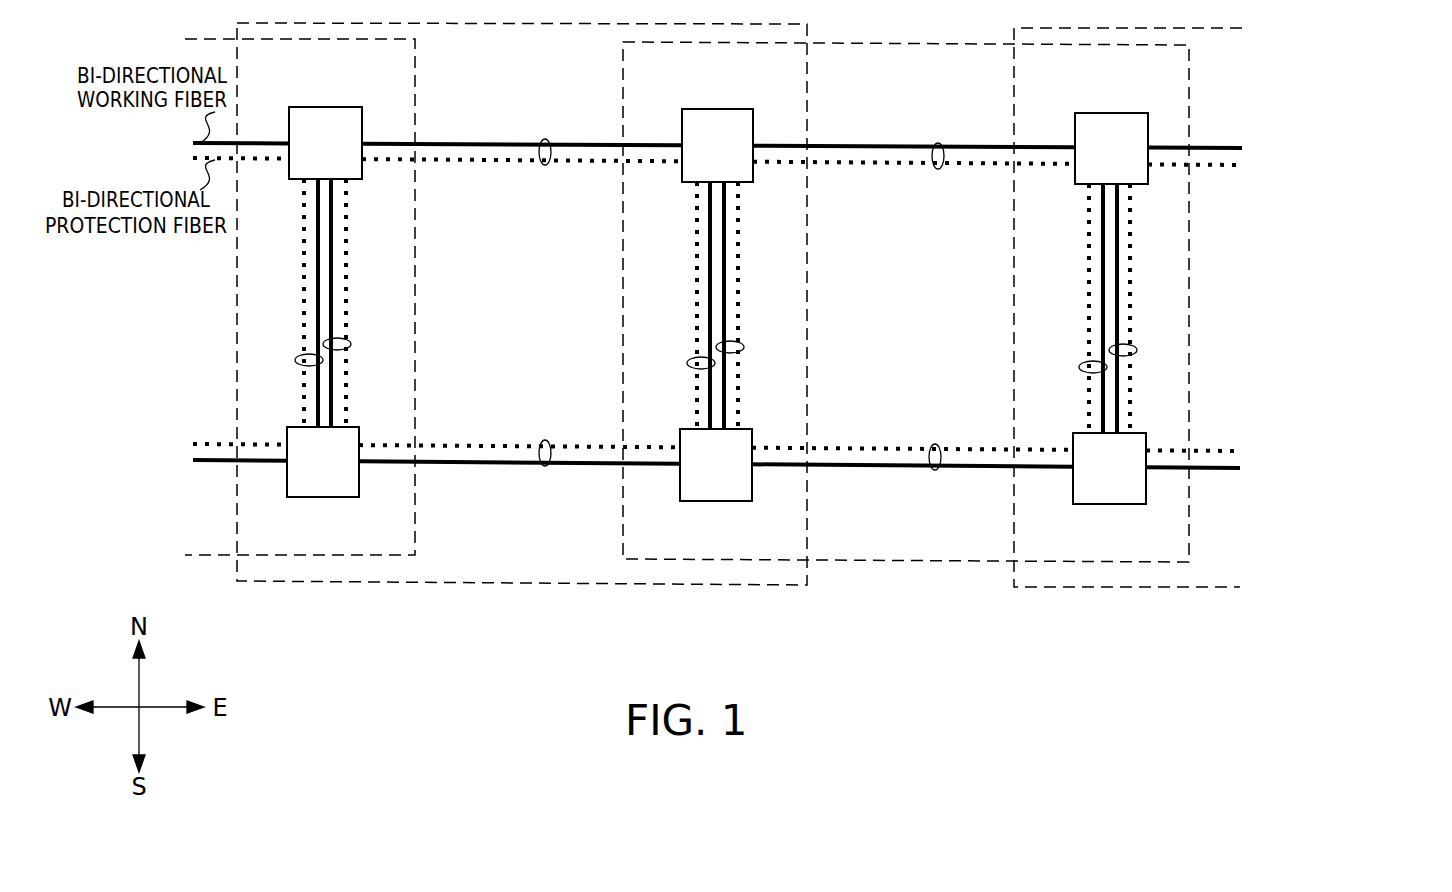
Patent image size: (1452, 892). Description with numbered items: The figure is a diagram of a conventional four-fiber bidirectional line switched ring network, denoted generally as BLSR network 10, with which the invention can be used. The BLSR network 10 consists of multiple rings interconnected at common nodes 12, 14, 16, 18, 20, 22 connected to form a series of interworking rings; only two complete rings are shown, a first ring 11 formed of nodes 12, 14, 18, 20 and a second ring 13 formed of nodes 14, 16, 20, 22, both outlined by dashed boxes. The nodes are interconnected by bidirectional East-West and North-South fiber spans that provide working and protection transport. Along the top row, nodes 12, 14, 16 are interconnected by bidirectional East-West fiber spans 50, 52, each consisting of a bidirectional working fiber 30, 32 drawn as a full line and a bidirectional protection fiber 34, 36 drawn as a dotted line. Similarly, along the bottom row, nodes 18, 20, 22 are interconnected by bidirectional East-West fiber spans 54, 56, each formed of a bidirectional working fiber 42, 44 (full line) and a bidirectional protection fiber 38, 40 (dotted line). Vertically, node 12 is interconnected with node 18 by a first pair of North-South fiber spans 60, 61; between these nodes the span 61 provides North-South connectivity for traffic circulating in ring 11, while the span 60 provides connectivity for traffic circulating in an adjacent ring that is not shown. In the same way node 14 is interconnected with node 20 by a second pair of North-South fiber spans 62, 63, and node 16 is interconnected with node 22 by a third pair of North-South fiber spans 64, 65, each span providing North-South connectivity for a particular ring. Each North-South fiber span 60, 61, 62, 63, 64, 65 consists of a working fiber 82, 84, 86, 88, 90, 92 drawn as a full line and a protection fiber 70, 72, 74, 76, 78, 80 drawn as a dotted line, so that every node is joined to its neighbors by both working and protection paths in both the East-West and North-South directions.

The BLSR network 10 is at (1262, 541).
The first ring 11 is at (490, 610).
The second ring 13 is at (898, 585).
The node 12 is at (318, 107).
The node 14 is at (712, 109).
The node 16 is at (1104, 113).
The node 18 is at (320, 497).
The node 20 is at (713, 501).
The node 22 is at (1103, 504).
The bidirectional working fiber 30 is at (440, 143).
The bidirectional working fiber 32 is at (832, 145).
The bidirectional protection fiber 34 is at (462, 163).
The bidirectional protection fiber 36 is at (855, 165).
The bidirectional protection fiber 38 is at (430, 443).
The bidirectional protection fiber 40 is at (823, 447).
The bidirectional working fiber 42 is at (455, 464).
The bidirectional working fiber 44 is at (848, 467).
The East-West fiber span 50 is at (545, 139).
The East-West fiber span 52 is at (938, 143).
The East-West fiber span 54 is at (545, 467).
The East-West fiber span 56 is at (935, 471).
The North-South fiber span 60 is at (295, 360).
The North-South fiber span 61 is at (351, 344).
The North-South fiber span 62 is at (687, 363).
The North-South fiber span 63 is at (744, 347).
The North-South fiber span 64 is at (1079, 367).
The North-South fiber span 65 is at (1137, 350).
The protection fiber 70 is at (303, 200).
The protection fiber 72 is at (347, 200).
The protection fiber 74 is at (696, 202).
The protection fiber 76 is at (739, 202).
The protection fiber 78 is at (1088, 203).
The protection fiber 80 is at (1131, 203).
The working fiber 82 is at (318, 274).
The working fiber 84 is at (332, 274).
The working fiber 86 is at (710, 275).
The working fiber 88 is at (725, 275).
The working fiber 90 is at (1103, 277).
The working fiber 92 is at (1118, 277).